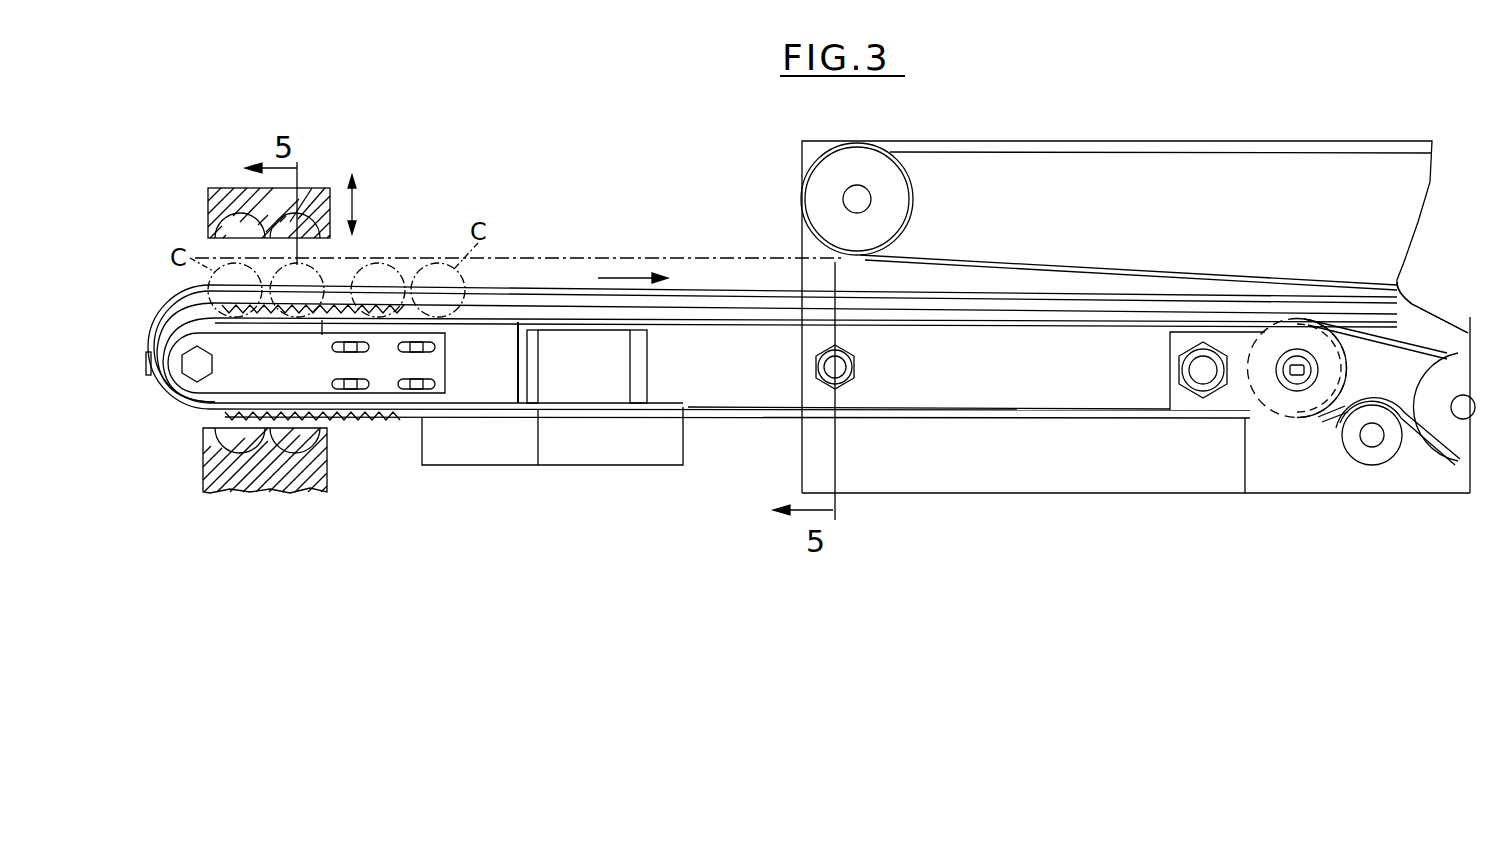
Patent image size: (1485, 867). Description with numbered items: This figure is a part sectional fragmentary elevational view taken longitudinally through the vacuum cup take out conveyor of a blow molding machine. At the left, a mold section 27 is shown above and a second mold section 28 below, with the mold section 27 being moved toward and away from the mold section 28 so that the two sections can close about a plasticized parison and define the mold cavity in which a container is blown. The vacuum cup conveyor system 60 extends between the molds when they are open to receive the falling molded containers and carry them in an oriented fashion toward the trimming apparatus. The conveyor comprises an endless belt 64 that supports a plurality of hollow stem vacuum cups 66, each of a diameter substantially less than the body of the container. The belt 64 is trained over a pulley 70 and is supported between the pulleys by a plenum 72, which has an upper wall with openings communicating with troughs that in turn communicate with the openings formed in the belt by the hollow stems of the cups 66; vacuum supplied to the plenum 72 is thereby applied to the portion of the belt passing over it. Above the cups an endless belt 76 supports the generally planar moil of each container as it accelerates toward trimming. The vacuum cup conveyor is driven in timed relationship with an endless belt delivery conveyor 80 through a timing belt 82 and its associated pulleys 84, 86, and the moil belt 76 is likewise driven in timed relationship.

The mold section 27 is at (314, 189).
The second mold section 28 is at (297, 482).
The vacuum cup conveyor system 60 is at (700, 314).
The endless belt 64 is at (190, 413).
The hollow stem vacuum cups 66 is at (333, 317).
The pulley 70 is at (1343, 370).
The plenum 72 is at (490, 369).
The endless belt 76 is at (514, 280).
The endless belt delivery conveyor 80 is at (1437, 463).
The timing belt 82 is at (1365, 330).
The pulley 84 is at (1245, 407).
The pulley 86 is at (1432, 327).